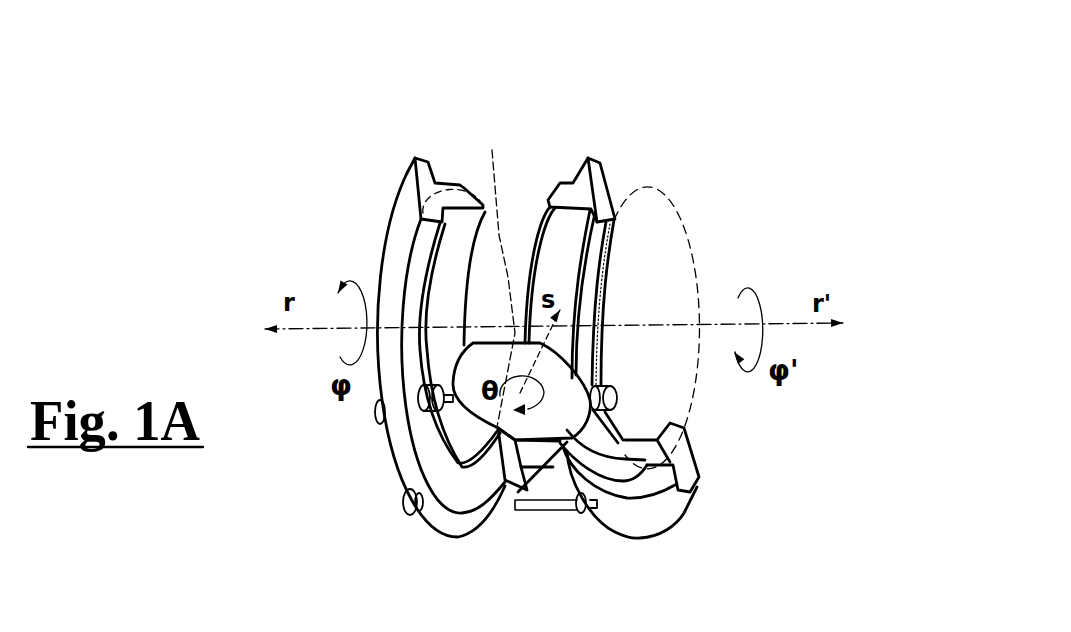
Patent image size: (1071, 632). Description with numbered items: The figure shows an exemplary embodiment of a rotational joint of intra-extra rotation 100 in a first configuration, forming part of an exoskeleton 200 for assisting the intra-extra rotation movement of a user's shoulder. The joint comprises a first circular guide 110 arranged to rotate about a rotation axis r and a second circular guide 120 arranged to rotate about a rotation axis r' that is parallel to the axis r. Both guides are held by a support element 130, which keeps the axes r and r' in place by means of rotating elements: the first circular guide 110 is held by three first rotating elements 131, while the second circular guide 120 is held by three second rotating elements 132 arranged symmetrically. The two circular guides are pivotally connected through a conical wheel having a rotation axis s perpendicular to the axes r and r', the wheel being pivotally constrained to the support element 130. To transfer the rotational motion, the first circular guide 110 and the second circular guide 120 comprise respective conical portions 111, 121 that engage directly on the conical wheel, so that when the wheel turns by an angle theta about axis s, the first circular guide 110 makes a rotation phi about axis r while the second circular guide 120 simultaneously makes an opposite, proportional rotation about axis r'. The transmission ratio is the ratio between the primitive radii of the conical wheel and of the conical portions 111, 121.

The rotational joint of intra-extra rotation 100 is at (613, 133).
The first circular guide 110 is at (430, 310).
The conical portion 111 is at (465, 186).
The second circular guide 120 is at (602, 342).
The conical portion 121 is at (612, 487).
The support element 130 is at (518, 343).
The first rotating elements 131 is at (418, 398).
The second rotating elements 132 is at (617, 389).
The exoskeleton 200 is at (752, 102).